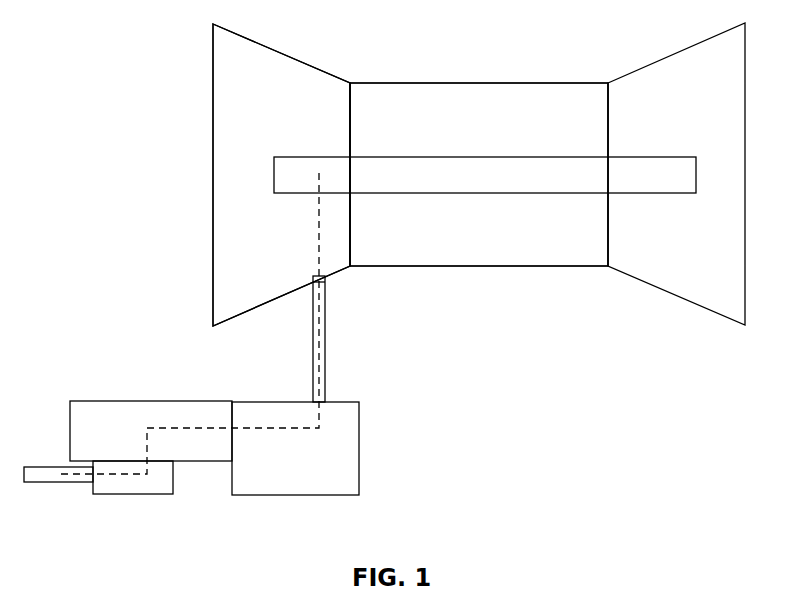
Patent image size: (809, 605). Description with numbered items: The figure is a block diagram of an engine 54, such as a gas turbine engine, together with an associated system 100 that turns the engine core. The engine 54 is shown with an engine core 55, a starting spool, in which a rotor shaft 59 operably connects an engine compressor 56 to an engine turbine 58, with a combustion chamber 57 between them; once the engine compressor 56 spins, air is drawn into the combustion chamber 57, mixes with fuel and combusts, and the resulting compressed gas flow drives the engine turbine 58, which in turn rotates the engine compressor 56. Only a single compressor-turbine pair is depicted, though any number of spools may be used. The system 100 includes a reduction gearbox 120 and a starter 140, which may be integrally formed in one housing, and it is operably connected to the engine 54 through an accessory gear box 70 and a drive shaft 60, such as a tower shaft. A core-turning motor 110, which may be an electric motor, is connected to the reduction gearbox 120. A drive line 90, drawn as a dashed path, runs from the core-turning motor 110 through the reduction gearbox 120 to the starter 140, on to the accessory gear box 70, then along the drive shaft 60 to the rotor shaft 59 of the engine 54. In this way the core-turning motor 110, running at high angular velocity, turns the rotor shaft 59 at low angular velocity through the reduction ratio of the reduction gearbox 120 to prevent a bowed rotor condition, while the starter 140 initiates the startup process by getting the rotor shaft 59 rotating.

The system 100 is at (82, 308).
The engine 54 is at (213, 73).
The engine core 55 is at (376, 133).
The engine compressor 56 is at (290, 76).
The combustion chamber 57 is at (507, 98).
The engine turbine 58 is at (694, 72).
The rotor shaft 59 is at (708, 174).
The drive shaft 60 is at (325, 340).
The accessory gear box 70 is at (359, 448).
The drive line 90 is at (314, 246).
The core-turning motor 110 is at (45, 483).
The reduction gearbox 120 is at (133, 495).
The starter 140 is at (90, 401).